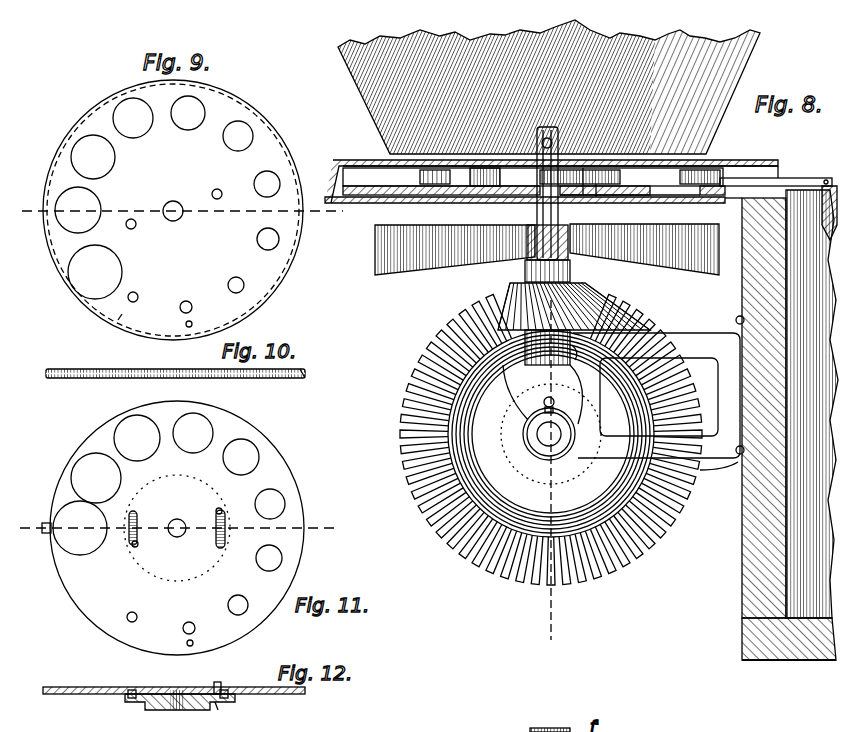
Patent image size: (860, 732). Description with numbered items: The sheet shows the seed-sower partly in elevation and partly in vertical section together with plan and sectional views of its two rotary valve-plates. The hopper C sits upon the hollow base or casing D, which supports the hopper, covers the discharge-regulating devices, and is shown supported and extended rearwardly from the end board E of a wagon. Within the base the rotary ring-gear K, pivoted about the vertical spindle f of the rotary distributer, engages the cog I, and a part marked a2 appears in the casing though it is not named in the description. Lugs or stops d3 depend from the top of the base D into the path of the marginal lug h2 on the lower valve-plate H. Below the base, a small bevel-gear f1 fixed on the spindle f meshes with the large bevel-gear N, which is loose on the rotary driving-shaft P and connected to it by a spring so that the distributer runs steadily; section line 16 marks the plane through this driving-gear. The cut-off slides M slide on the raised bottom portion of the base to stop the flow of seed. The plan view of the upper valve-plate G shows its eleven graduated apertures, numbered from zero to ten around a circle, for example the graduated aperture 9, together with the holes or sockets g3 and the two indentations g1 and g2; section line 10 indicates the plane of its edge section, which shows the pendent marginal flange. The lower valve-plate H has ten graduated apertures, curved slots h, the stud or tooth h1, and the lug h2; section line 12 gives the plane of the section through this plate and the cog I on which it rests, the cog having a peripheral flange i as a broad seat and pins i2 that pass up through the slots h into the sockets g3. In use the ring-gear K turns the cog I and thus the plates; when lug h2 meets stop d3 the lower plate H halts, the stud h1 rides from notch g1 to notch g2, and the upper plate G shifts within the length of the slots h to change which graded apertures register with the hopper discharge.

In FIG. 8, the hopper C is at (365, 92).
In FIG. 8, the base or casing D is at (551, 169).
In FIG. 8, the rotary ring-gear K is at (534, 181).
In FIG. 8, the discharge opening a2 is at (570, 177).
In FIG. 8, the stop d3 is at (586, 170).
In FIG. 8, the marginal lug h2 is at (596, 196).
In FIG. 11, the marginal lug h2 is at (44, 522).
In FIG. 8, the lower valve-plate H is at (618, 196).
In FIG. 11, the lower valve-plate H is at (177, 528).
In FIG. 12, the lower valve-plate H is at (174, 677).
In FIG. 8, the upper valve-plate G is at (722, 162).
In FIG. 9, the upper valve-plate G is at (173, 210).
In FIG. 10, the upper valve-plate G is at (175, 365).
In FIG. 8, the cut-off slide M is at (810, 170).
In FIG. 8, the spindle f is at (527, 248).
In FIG. 8, the end board E is at (742, 290).
In FIG. 8, the small bevel-gear f1 is at (582, 296).
In FIG. 8, the large bevel-gear N is at (470, 556).
In FIG. 8, the rotary driving-shaft P is at (537, 440).
In FIG. 8, the section line 16 is at (563, 651).
In FIG. 9, the holes or sockets g3 is at (183, 218).
In FIG. 9, the indentation g1 is at (122, 318).
In FIG. 9, the second indentation g2 is at (199, 323).
In FIG. 9, the section line 10 is at (183, 212).
In FIG. 10, the graduated aperture 9 is at (305, 378).
In FIG. 11, the curved slot h is at (180, 522).
In FIG. 12, the curved slot h is at (173, 680).
In FIG. 11, the pin i2 is at (221, 509).
In FIG. 12, the pin i2 is at (215, 684).
In FIG. 11, the stud or tooth h1 is at (193, 642).
In FIG. 11, the section line 12 is at (185, 530).
In FIG. 12, the cog I is at (177, 708).
In FIG. 12, the peripheral flange i is at (217, 704).